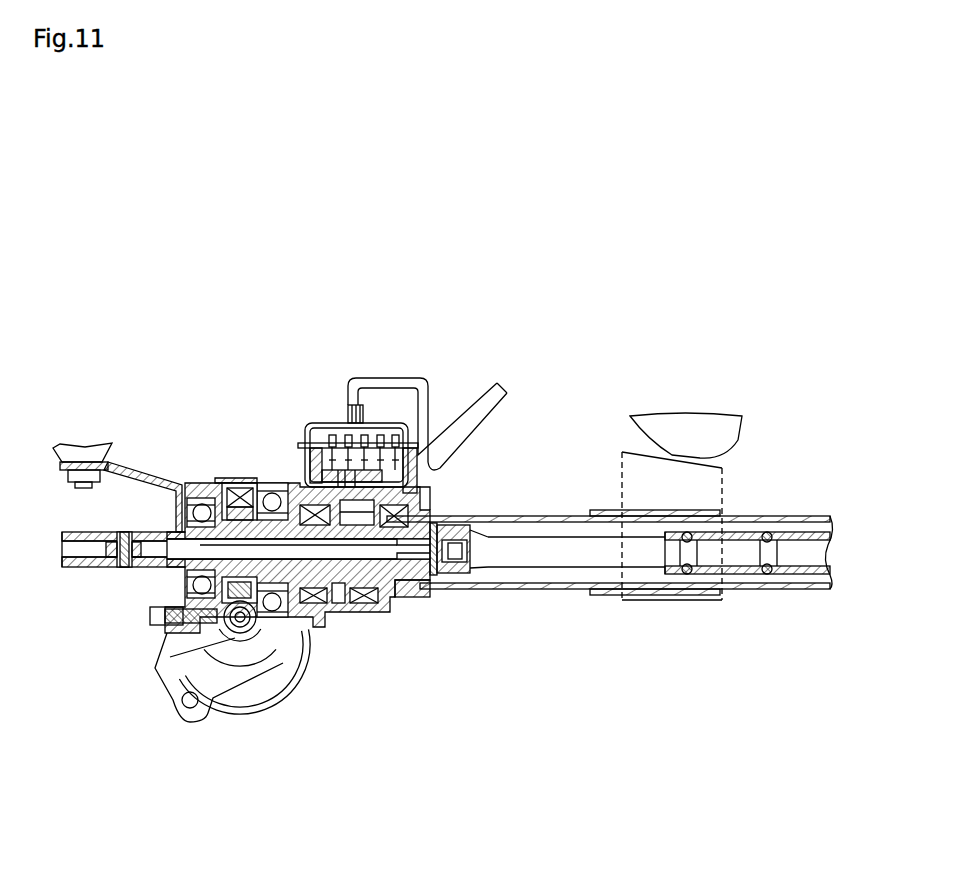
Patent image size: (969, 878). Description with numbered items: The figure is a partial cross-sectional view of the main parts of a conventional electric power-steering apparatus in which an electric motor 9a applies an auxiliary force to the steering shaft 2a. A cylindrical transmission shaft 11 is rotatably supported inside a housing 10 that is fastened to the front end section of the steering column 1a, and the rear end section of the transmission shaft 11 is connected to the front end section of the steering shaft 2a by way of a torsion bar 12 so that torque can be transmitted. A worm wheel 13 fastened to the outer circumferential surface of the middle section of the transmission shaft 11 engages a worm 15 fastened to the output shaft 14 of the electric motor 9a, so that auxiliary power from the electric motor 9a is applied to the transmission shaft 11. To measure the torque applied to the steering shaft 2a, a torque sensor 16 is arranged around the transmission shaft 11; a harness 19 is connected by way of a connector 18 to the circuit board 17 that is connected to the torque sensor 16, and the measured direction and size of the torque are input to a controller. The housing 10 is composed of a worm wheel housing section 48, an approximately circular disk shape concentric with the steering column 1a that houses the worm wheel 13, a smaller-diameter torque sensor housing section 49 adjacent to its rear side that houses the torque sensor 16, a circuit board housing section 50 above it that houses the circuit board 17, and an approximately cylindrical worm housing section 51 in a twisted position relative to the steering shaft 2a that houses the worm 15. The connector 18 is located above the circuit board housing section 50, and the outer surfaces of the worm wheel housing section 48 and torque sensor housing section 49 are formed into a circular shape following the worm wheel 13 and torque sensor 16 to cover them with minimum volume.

The steering column 1a is at (808, 514).
The steering shaft 2a is at (558, 557).
The electric motor 9a is at (267, 667).
The housing 10 is at (253, 480).
The transmission shaft 11 is at (148, 560).
The torsion bar 12 is at (410, 593).
The worm wheel 13 is at (228, 480).
The output shaft 14 is at (230, 640).
The worm 15 is at (240, 634).
The torque sensor 16 is at (362, 600).
The circuit board 17 is at (340, 428).
The connector 18 is at (338, 422).
The harness 19 is at (398, 383).
The worm wheel housing section 48 is at (225, 477).
The torque sensor housing section 49 is at (333, 617).
The circuit board housing section 50 is at (415, 470).
The worm housing section 51 is at (175, 710).